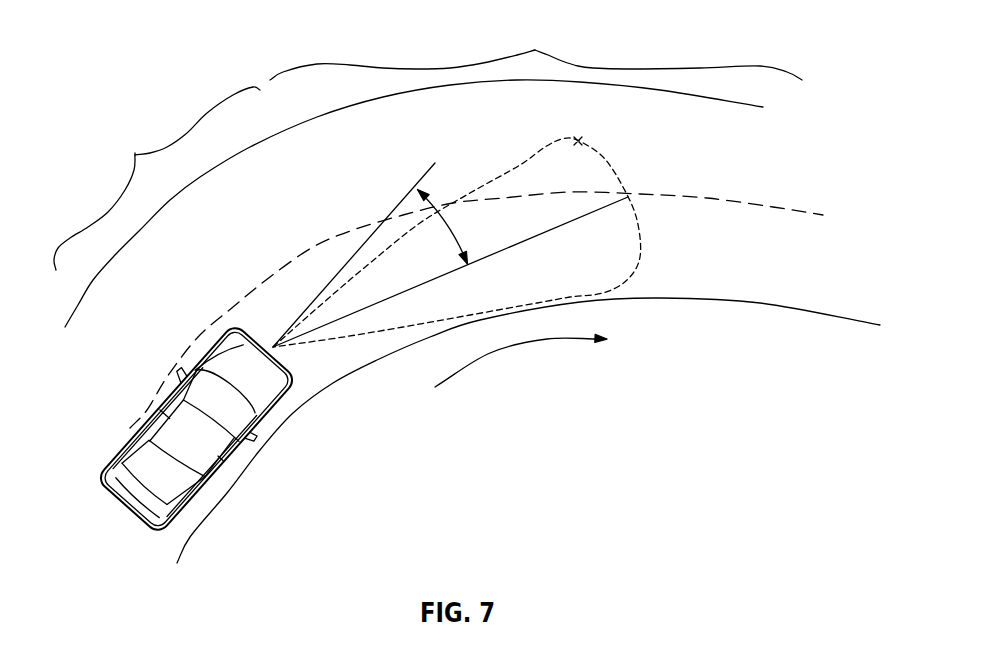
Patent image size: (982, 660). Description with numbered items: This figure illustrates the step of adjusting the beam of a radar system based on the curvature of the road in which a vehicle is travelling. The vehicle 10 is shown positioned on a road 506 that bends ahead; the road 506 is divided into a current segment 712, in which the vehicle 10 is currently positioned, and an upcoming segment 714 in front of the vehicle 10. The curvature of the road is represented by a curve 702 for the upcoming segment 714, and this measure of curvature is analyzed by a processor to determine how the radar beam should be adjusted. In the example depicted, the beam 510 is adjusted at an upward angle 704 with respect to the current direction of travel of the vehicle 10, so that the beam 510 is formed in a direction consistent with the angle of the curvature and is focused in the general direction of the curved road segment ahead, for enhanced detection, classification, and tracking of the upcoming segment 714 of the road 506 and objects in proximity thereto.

The vehicle 10 is at (125, 510).
The road 506 is at (790, 284).
The beam 510 is at (580, 138).
The curve 702 is at (553, 342).
The upward angle 704 is at (428, 205).
The current segment 712 is at (157, 178).
The upcoming segment 714 is at (536, 51).